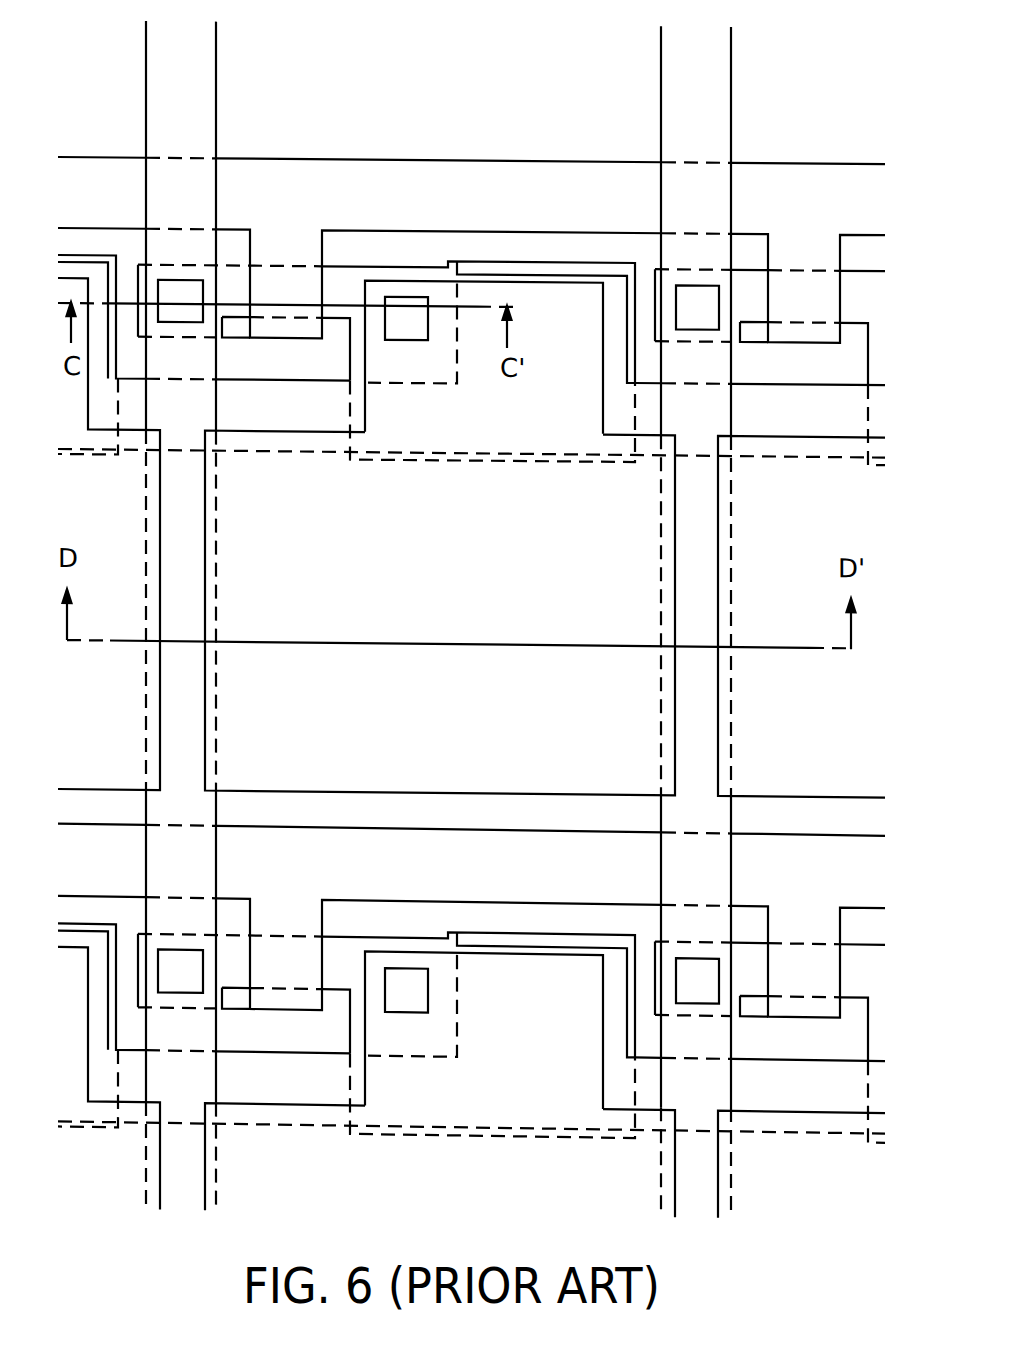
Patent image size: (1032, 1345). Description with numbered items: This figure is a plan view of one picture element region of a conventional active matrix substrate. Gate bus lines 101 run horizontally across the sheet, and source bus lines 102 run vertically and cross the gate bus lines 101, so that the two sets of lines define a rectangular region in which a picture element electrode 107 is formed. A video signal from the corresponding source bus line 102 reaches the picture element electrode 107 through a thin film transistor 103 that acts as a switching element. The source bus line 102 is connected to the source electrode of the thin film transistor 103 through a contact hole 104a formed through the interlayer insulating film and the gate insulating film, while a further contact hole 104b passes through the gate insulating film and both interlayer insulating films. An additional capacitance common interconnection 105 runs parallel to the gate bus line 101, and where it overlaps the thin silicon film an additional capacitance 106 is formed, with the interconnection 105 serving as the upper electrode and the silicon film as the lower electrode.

The gate bus line 101 is at (122, 171).
The source bus line 102 is at (202, 130).
The thin film transistor 103 is at (342, 278).
The contact hole 104a is at (187, 289).
The contact hole 104b is at (407, 319).
The additional capacitance common interconnection 105 is at (295, 436).
The additional capacitance 106 is at (560, 298).
The picture element electrode 107 is at (440, 613).